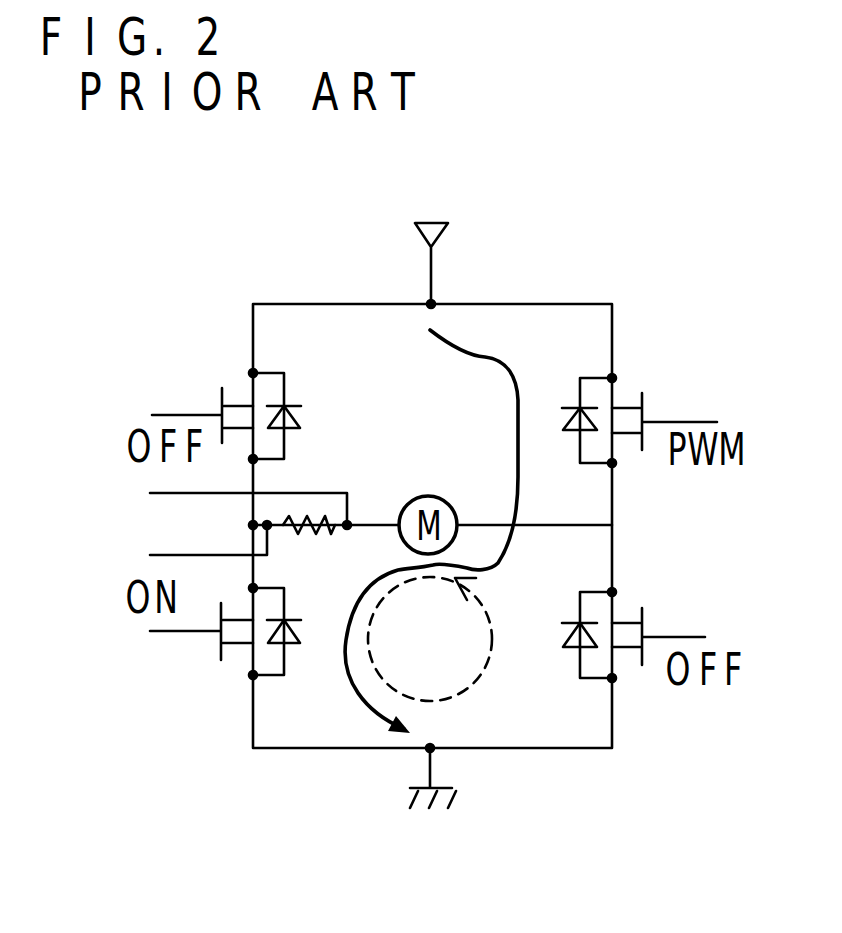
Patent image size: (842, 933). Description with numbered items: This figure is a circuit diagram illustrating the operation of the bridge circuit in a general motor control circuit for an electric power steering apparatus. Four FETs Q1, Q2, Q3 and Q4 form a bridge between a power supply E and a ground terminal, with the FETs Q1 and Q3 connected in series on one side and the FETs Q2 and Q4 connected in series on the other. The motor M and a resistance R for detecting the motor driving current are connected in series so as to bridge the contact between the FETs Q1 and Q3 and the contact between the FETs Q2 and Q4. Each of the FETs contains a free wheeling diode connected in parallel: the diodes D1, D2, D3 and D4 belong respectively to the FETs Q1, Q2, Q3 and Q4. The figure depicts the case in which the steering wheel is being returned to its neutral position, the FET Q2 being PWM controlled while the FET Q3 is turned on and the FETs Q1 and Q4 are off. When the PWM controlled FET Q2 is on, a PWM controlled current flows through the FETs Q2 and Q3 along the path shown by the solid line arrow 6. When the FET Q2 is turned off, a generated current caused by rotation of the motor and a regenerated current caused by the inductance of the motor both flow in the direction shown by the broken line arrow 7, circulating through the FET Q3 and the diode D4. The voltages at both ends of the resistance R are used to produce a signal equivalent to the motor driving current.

The power supply E is at (443, 222).
The FET Q1 is at (220, 390).
The FET Q2 is at (650, 400).
The FET Q3 is at (218, 662).
The FET Q4 is at (650, 615).
The free wheeling diode D1 is at (290, 400).
The free wheeling diode D2 is at (575, 405).
The free wheeling diode D3 is at (288, 646).
The free wheeling diode D4 is at (575, 650).
The resistance for detecting a motor driving current R is at (302, 543).
The solid line arrow 6 is at (450, 353).
The broken line arrow 7 is at (373, 658).